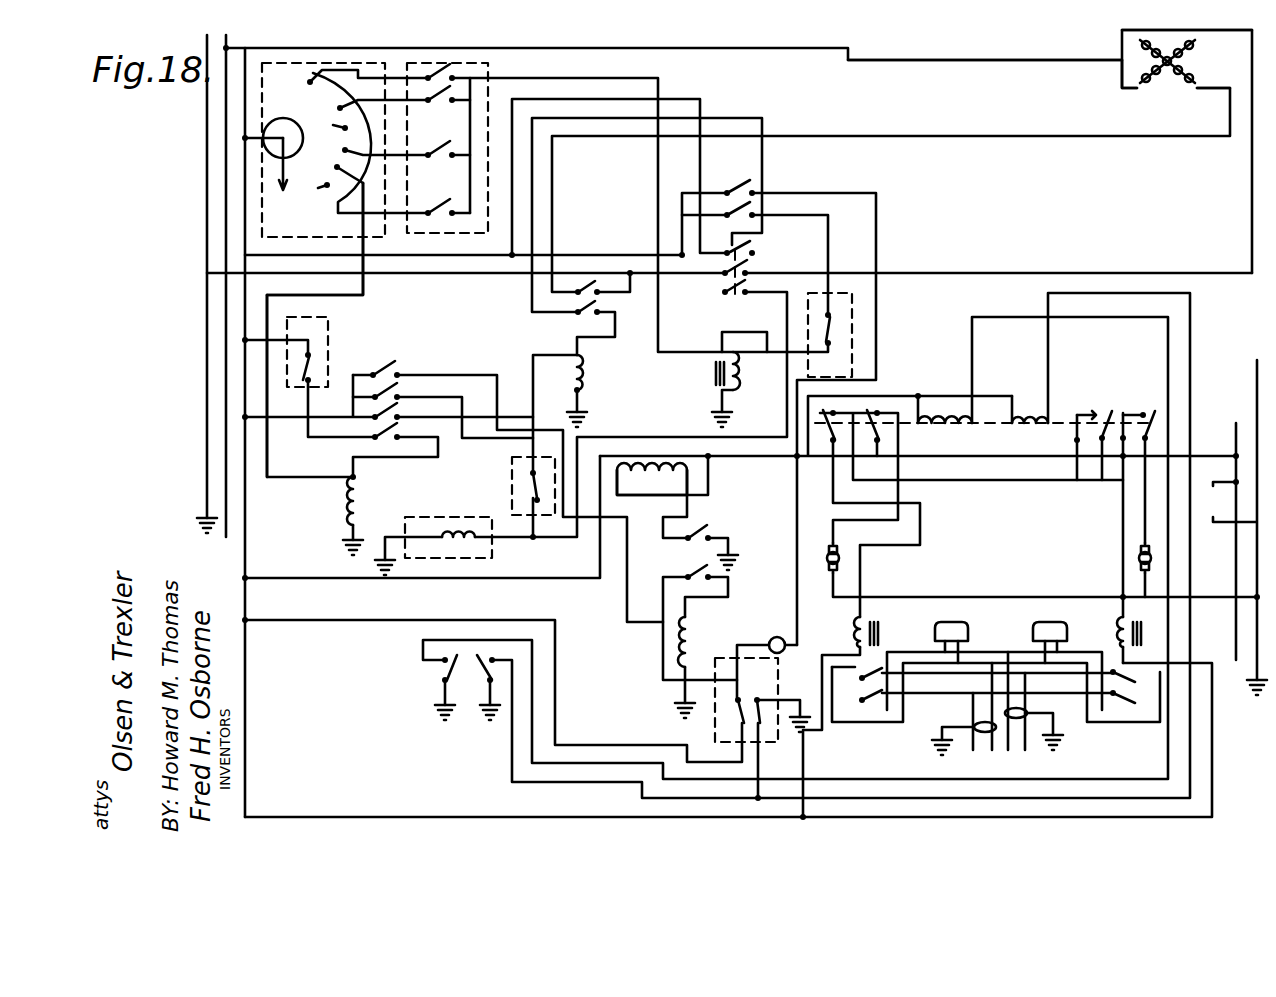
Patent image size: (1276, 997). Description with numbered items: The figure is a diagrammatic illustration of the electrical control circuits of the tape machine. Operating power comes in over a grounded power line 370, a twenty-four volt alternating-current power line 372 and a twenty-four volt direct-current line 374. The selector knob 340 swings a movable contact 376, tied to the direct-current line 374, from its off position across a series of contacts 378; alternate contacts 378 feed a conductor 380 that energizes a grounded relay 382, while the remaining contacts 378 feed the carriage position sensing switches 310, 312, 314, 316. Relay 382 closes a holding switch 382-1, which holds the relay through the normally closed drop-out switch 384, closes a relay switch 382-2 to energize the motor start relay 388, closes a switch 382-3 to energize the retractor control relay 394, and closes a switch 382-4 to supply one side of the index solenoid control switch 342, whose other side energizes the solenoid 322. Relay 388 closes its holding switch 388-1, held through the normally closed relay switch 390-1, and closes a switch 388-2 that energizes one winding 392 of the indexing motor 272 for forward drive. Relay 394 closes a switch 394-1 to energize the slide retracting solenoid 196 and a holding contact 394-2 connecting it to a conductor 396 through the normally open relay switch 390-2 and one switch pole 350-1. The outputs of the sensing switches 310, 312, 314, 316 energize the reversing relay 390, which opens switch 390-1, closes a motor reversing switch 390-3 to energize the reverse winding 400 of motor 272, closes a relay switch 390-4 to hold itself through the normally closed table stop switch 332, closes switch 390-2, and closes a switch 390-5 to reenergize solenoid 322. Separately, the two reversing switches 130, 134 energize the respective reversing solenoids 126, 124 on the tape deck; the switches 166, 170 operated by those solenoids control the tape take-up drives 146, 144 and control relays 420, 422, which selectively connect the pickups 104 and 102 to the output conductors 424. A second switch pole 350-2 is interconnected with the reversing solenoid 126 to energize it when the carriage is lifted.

The pickup 102 is at (1048, 620).
The pickup 104 is at (952, 620).
The reversing solenoid 124 is at (945, 447).
The reversing solenoid 126 is at (1028, 447).
The reversing switch 130 is at (443, 663).
The reversing switch 134 is at (483, 653).
The tape take-up drive 144 is at (1133, 558).
The tape take-up drive 146 is at (822, 556).
The switch 166 is at (868, 392).
The switch 170 is at (1118, 410).
The slide retracting solenoid 196 is at (690, 483).
The indexing motor 272 is at (1102, 82).
The carriage position sensing switch 310 is at (485, 63).
The carriage position sensing switch 312 is at (440, 105).
The carriage position sensing switch 314 is at (440, 160).
The carriage position sensing switch 316 is at (446, 218).
The solenoid 322 is at (466, 546).
The table stop switch 332 is at (845, 330).
The selector knob 340 is at (289, 118).
The index solenoid control switch 342 is at (512, 468).
The switch pole 350-1 is at (738, 698).
The switch pole 350-2 is at (768, 690).
The grounded power line 370 is at (207, 222).
The A.C. power line 372 is at (226, 318).
The D.C. power line 374 is at (245, 177).
The movable contact 376 is at (337, 165).
The contacts 378 is at (333, 125).
The conductor 380 is at (352, 296).
The relay 382 is at (362, 483).
The holding switch 382-1 is at (386, 440).
The relay switch 382-2 is at (399, 414).
The switch 382-3 is at (402, 366).
The switch 382-4 is at (400, 391).
The drop-out switch 384 is at (328, 352).
The motor start relay 388 is at (590, 385).
The holding switch 388-1 is at (576, 316).
The switch 388-2 is at (592, 284).
The reversing relay 390 is at (735, 396).
The relay switch 390-1 is at (752, 251).
The relay switch 390-2 is at (755, 191).
The motor reversing switch 390-3 is at (752, 271).
The relay switch 390-4 is at (756, 214).
The switch 390-5 is at (727, 294).
The winding 392 is at (1175, 77).
The retractor control relay 394 is at (690, 646).
The switch 394-1 is at (706, 527).
The holding contact 394-2 is at (710, 578).
The conductor 396 is at (786, 641).
The reverse winding 400 is at (1195, 53).
The control relay 420 is at (870, 620).
The control relay 422 is at (1118, 617).
The output conductors 424 is at (1030, 770).